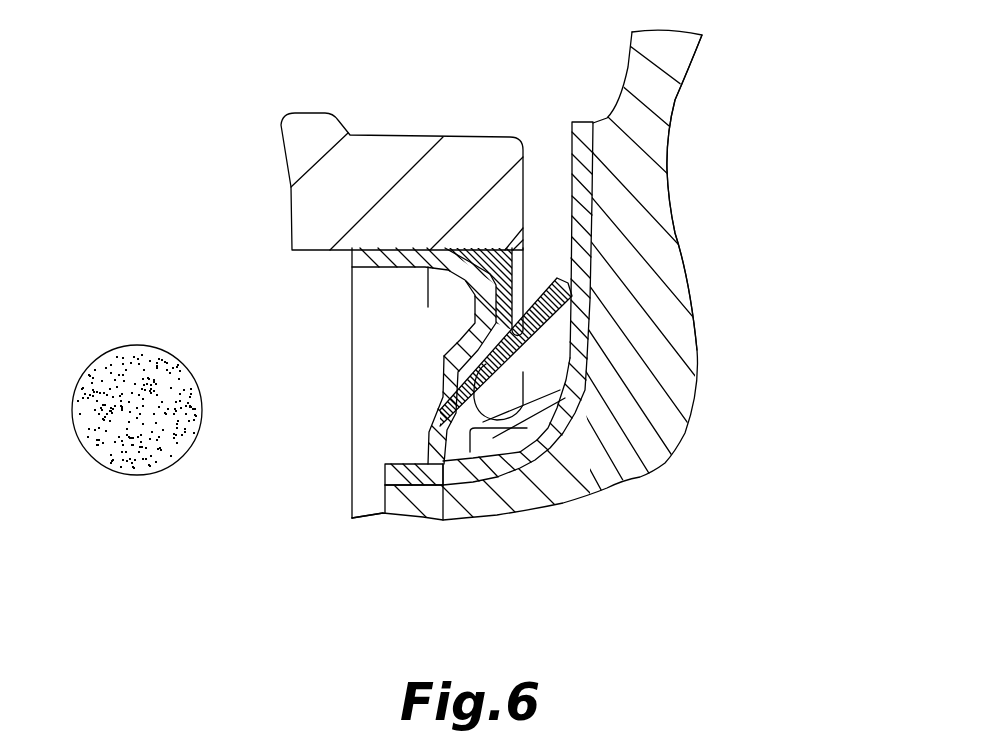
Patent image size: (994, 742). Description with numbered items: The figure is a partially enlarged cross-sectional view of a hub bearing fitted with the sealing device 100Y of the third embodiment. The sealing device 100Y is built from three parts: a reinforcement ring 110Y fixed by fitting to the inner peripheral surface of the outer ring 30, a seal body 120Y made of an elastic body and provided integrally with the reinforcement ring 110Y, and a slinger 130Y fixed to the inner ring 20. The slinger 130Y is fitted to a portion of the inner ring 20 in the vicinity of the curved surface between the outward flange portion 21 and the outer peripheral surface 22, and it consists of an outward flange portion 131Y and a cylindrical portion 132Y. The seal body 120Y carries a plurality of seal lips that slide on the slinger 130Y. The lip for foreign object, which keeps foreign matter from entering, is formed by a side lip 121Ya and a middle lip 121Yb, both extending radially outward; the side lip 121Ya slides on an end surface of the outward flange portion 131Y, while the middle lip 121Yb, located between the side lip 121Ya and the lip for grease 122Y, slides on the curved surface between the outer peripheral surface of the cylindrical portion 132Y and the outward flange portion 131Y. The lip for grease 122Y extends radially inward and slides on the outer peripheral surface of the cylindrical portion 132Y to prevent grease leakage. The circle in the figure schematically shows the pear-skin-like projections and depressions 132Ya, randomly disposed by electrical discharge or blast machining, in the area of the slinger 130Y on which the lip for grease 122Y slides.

The sealing device 100Y is at (550, 112).
The reinforcement ring 110Y is at (388, 270).
The seal body 120Y is at (565, 362).
The side lip 121Ya is at (590, 302).
The middle lip 121Yb is at (575, 450).
The lip for grease 122Y is at (446, 493).
The slinger 130Y is at (545, 148).
The outward flange portion 131Y is at (585, 140).
The cylindrical portion 132Y is at (397, 482).
The pear-skin-like projections and depressions 132Ya is at (395, 463).
The inner ring 20 is at (708, 441).
The outward flange portion 21 is at (667, 197).
The outer peripheral surface 22 is at (385, 470).
The outer ring 30 is at (384, 150).